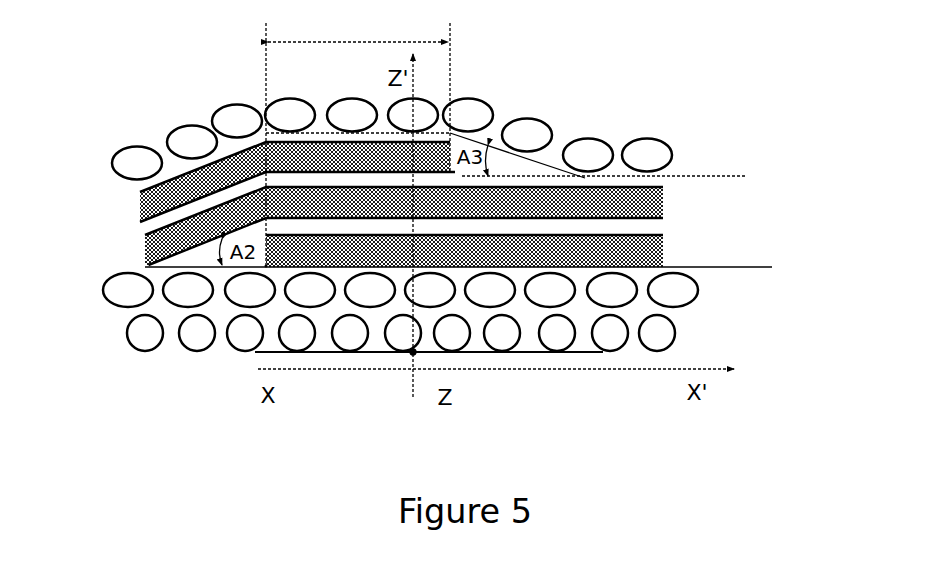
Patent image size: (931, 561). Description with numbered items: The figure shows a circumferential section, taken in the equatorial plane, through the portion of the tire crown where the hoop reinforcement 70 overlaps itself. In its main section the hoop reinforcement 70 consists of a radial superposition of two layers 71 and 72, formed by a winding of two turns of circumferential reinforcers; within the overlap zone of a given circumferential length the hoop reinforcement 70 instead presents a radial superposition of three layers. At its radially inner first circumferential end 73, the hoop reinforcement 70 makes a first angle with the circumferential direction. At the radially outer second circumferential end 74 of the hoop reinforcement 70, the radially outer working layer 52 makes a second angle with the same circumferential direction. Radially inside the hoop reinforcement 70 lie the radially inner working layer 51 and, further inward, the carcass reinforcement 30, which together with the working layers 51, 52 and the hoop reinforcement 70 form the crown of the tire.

The carcass reinforcement 30 is at (148, 332).
The radially inner working layer 51 is at (126, 293).
The radially outer working layer 52 is at (140, 159).
The hoop reinforcement 70 is at (519, 213).
The first layer of circumferential reinforcers 71 is at (658, 253).
The second layer of circumferential reinforcers 72 is at (658, 205).
The radially inner first circumferential end 73 is at (265, 268).
The radially outer second circumferential end 74 is at (430, 150).